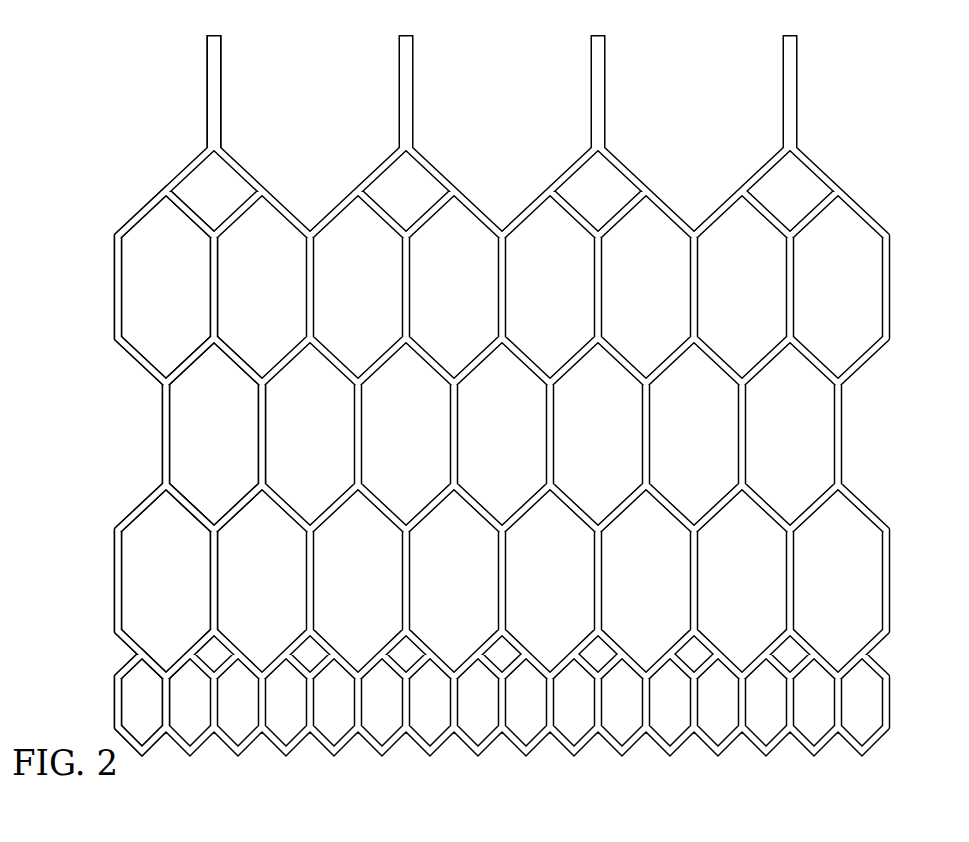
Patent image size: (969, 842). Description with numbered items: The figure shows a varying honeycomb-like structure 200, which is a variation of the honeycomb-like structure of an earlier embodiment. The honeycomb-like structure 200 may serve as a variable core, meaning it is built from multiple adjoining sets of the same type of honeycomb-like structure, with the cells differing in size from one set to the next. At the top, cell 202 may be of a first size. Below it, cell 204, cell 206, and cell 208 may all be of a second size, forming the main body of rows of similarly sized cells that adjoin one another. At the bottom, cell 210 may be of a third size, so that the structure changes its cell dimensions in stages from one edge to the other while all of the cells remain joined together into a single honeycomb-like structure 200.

The honeycomb-like structure 200 is at (83, 81).
The cell 202 is at (227, 87).
The cell 204 is at (132, 287).
The cell 206 is at (178, 437).
The cell 208 is at (132, 582).
The cell 210 is at (132, 690).